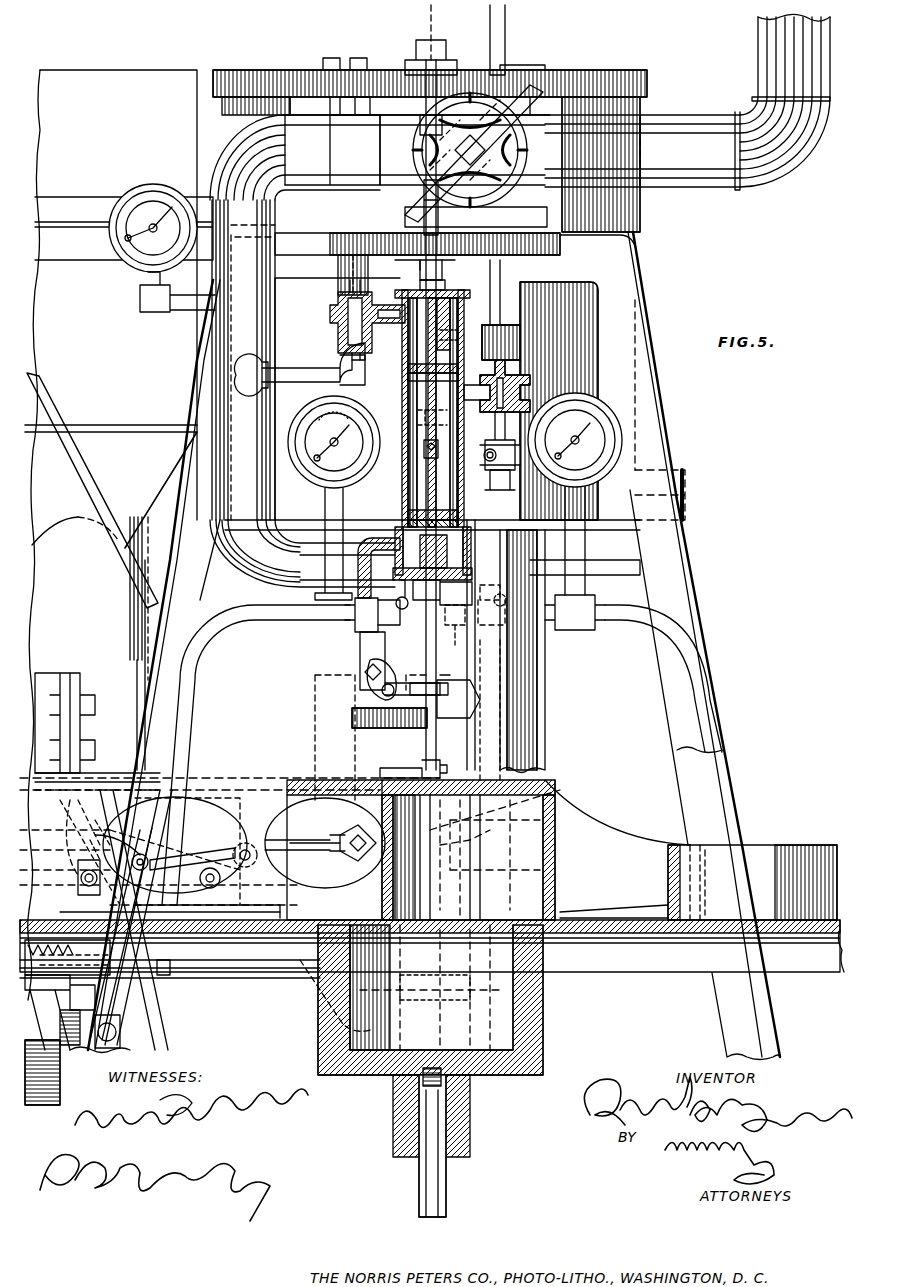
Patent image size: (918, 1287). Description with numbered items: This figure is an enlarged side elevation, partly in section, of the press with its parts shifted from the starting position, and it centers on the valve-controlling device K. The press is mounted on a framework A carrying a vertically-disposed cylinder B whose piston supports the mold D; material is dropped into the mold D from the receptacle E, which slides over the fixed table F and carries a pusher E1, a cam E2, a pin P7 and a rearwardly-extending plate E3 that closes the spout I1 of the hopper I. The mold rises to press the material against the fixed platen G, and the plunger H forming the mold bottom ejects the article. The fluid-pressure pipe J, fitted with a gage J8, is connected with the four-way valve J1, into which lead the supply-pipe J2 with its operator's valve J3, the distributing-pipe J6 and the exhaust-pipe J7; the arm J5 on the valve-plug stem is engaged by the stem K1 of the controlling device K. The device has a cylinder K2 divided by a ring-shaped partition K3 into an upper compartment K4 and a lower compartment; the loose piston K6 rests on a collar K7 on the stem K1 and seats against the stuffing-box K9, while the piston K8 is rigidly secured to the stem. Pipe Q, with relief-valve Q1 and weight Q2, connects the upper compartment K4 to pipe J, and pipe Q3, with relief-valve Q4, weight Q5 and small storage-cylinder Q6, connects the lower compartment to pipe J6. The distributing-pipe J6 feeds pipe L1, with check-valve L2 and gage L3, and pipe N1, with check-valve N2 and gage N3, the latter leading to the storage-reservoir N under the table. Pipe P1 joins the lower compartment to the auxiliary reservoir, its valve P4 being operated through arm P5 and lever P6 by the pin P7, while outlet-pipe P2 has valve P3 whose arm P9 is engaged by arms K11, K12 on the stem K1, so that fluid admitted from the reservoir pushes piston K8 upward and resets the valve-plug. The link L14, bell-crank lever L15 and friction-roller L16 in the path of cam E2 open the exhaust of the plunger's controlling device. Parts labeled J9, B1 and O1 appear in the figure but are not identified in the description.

The hopper I is at (120, 535).
The spout I1 is at (97, 701).
The fluid-pressure pipe J is at (225, 332).
The four-way valve J1 is at (510, 75).
The supply-pipe J2 is at (488, 28).
The valve J3 is at (540, 142).
The arm J5 is at (495, 140).
The distributing-pipe J6 is at (500, 300).
The exhaust-pipe J7 is at (708, 135).
The gage J8 is at (147, 197).
The coupling J9 is at (455, 615).
The valve-controlling device K is at (402, 390).
The stem K1 is at (431, 760).
The cylinder K2 is at (418, 418).
The ring-shaped partition K3 is at (408, 368).
The upper compartment K4 is at (452, 312).
The piston K6 is at (408, 362).
The collar K7 is at (424, 446).
The piston K8 is at (408, 514).
The stuffing-box K9 is at (446, 285).
The arm K11 is at (408, 680).
The arm K12 is at (418, 760).
The cylinder B is at (250, 85).
The platform B1 is at (612, 530).
The framework A is at (670, 592).
The pipe Q is at (335, 372).
The relief-valve Q1 is at (340, 308).
The weight Q2 is at (345, 258).
The pipe Q3 is at (495, 428).
The relief-valve Q4 is at (520, 378).
The weight Q5 is at (512, 328).
The storage-cylinder Q6 is at (492, 654).
The storage-reservoir N is at (60, 1085).
The pipe N1 is at (115, 1030).
The check-valve N2 is at (403, 610).
The gage N3 is at (322, 420).
The pipe L1 is at (645, 620).
The check-valve L2 is at (537, 625).
The gage L3 is at (615, 436).
The link L14 is at (150, 1058).
The bell-crank lever L15 is at (175, 860).
The friction-roller L16 is at (215, 865).
The pipe P1 is at (262, 615).
The outlet-pipe P2 is at (360, 650).
The valve P3 is at (362, 698).
The valve P4 is at (60, 1012).
The arm P5 is at (67, 957).
The lever P6 is at (119, 828).
The pin P7 is at (84, 841).
The arm P9 is at (416, 696).
The platen G is at (352, 718).
The receptacle E is at (421, 850).
The pusher E1 is at (668, 855).
The cam E2 is at (578, 798).
The plate E3 is at (252, 766).
The nut O1 is at (330, 840).
The table F is at (222, 930).
The mold D is at (355, 1040).
The plunger H is at (380, 1082).